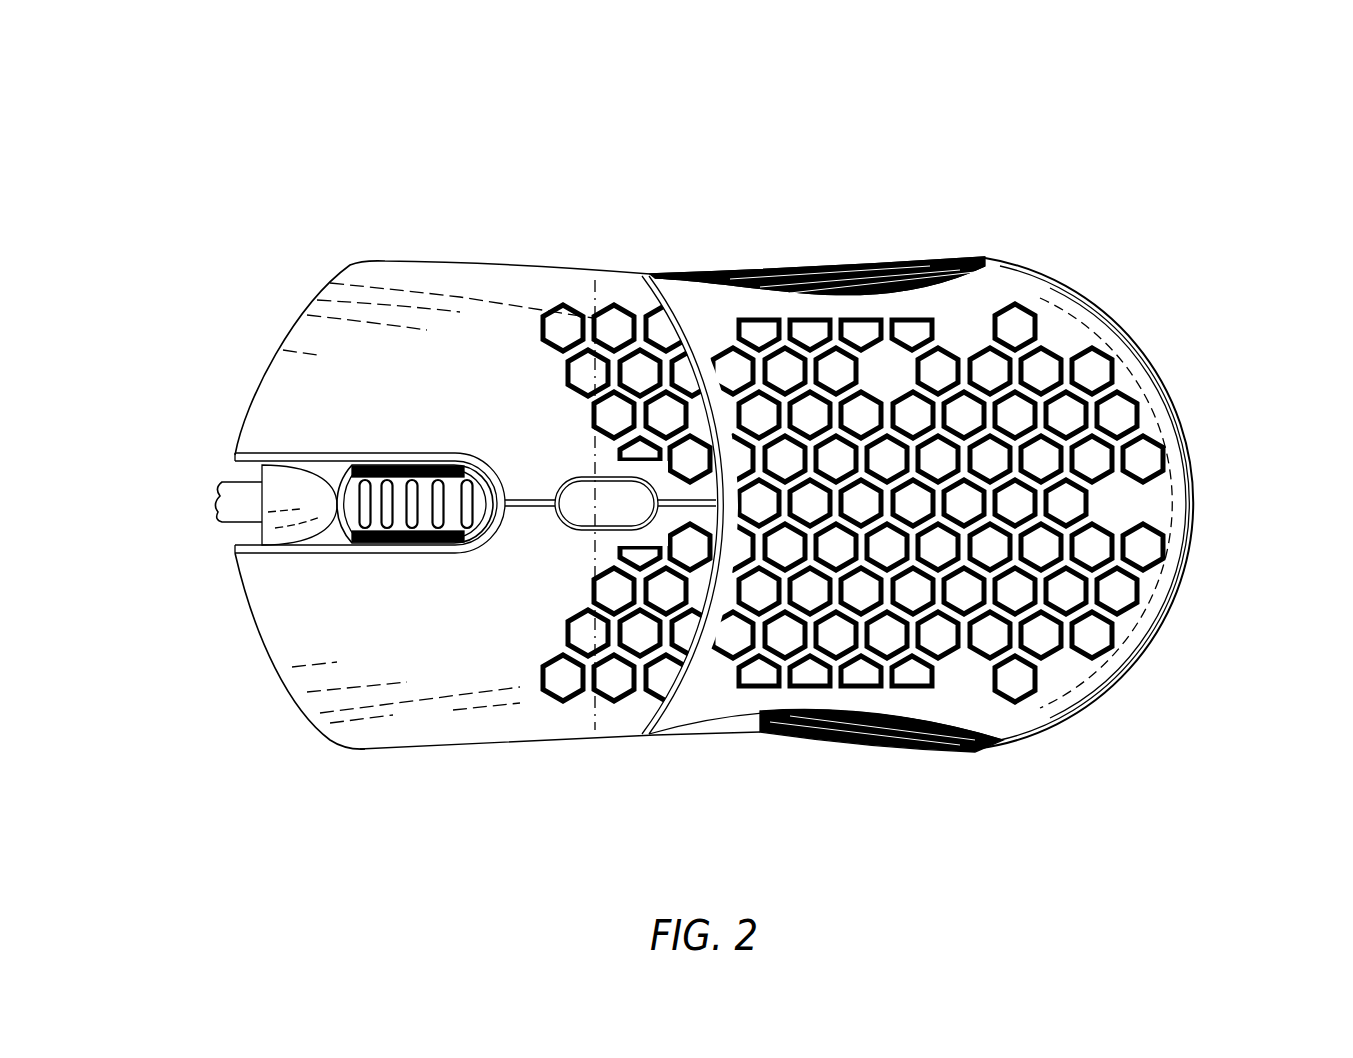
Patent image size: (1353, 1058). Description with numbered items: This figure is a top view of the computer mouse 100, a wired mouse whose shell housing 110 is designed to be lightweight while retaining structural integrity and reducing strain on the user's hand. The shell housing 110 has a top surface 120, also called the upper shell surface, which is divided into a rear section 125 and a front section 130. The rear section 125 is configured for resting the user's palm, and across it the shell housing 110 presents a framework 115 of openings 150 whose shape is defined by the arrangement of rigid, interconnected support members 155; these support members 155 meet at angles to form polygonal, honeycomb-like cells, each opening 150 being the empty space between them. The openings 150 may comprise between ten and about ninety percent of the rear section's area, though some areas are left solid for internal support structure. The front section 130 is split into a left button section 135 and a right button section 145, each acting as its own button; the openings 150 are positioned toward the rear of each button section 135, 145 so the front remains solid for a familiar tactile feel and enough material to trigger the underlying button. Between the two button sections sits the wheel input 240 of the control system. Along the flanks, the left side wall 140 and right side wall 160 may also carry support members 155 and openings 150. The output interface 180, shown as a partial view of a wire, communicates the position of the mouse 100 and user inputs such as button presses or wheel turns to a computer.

The computer mouse 100 is at (878, 146).
The shell housing 110 is at (1199, 540).
The framework 115 is at (1147, 563).
The top surface 120 is at (1194, 484).
The rear section 125 is at (1065, 660).
The front section 130 is at (435, 746).
The left button section 135 is at (290, 377).
The left side wall 140 is at (974, 751).
The right button section 145 is at (280, 648).
The opening 150 is at (1120, 415).
The support member 155 is at (638, 345).
The right side wall 160 is at (975, 265).
The output interface 180 is at (228, 520).
The wheel input 240 is at (408, 468).